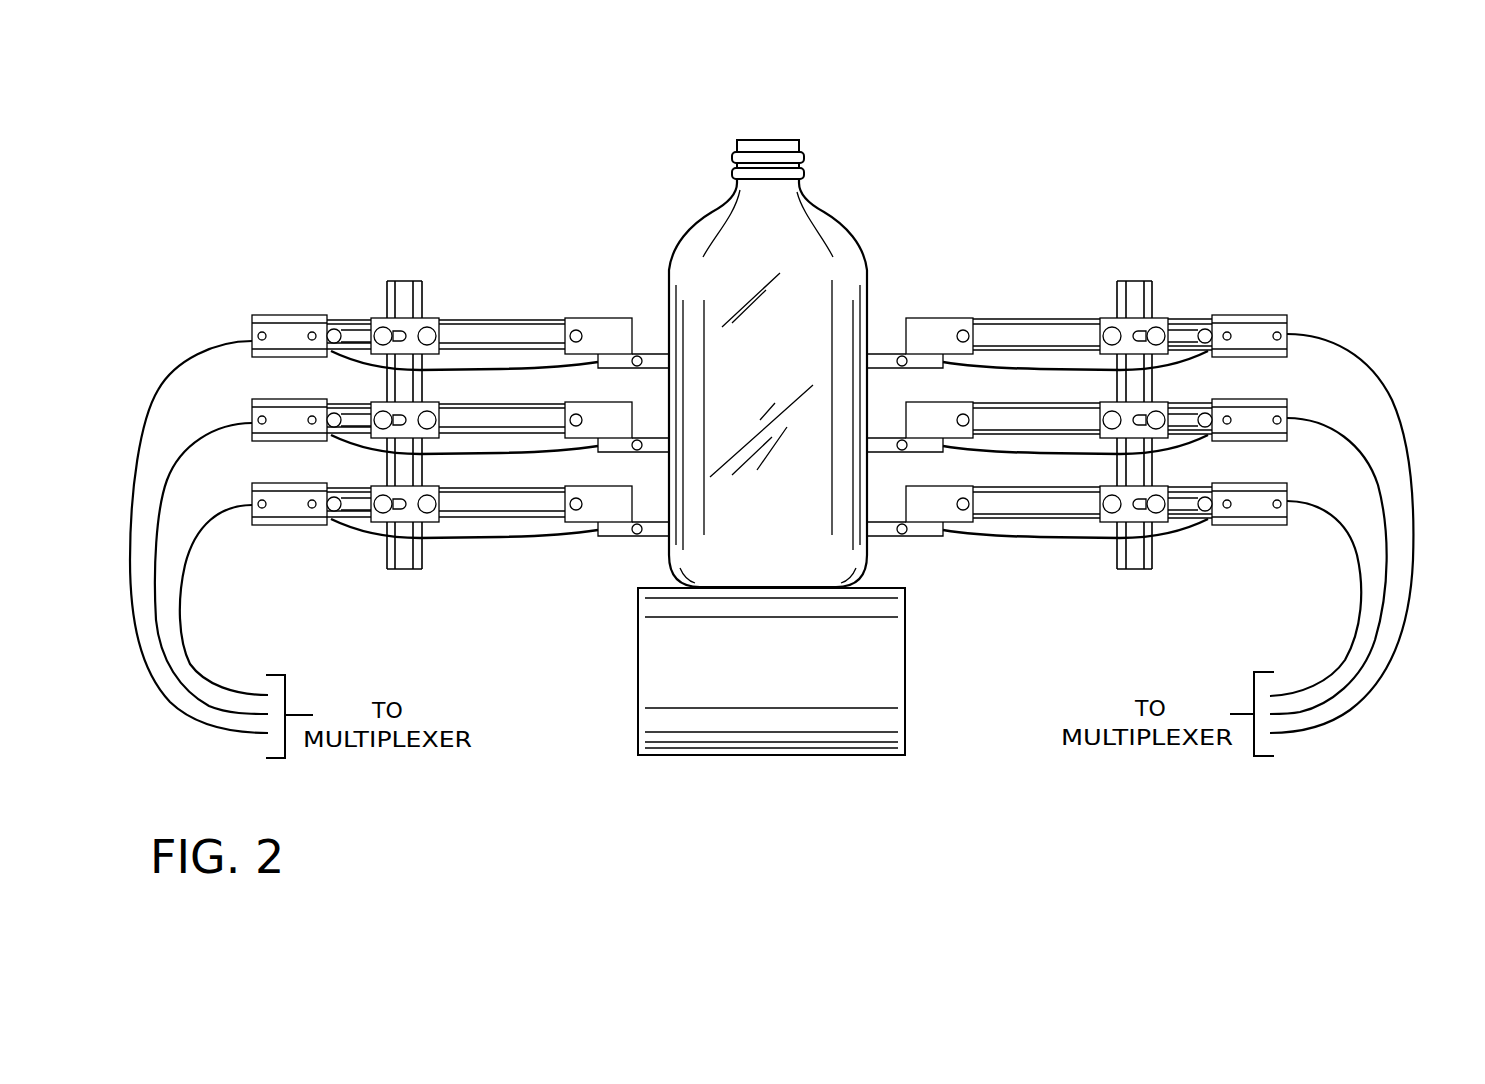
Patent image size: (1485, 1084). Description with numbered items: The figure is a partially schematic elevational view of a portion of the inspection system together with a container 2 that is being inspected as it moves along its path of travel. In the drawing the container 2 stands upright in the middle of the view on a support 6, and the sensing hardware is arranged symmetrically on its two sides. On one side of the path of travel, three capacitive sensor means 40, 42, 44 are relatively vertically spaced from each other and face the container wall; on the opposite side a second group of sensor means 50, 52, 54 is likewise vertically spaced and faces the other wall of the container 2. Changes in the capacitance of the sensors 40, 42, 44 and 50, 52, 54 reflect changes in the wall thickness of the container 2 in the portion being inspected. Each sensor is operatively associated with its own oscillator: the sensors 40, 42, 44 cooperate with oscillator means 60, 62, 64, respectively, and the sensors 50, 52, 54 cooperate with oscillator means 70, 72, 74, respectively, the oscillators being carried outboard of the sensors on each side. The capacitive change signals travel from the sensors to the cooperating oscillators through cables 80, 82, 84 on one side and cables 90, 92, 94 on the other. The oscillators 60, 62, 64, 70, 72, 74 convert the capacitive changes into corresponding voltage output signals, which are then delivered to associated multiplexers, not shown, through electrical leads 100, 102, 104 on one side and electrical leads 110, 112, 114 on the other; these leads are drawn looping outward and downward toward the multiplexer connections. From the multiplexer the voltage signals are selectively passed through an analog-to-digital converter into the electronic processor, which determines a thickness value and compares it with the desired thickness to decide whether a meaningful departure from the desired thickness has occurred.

The container 2 is at (822, 205).
The support platform 6 is at (663, 695).
The sensor means 40 is at (875, 353).
The sensor means 42 is at (875, 438).
The sensor means 44 is at (875, 522).
The sensor means 50 is at (652, 532).
The sensor means 52 is at (648, 446).
The sensor means 54 is at (648, 362).
The oscillator means 60 is at (1252, 312).
The oscillator means 62 is at (1241, 393).
The oscillator means 64 is at (1237, 480).
The oscillator means 70 is at (265, 540).
The oscillator means 72 is at (262, 445).
The oscillator means 74 is at (259, 363).
The cable 80 is at (1003, 370).
The cable 82 is at (993, 452).
The cable 84 is at (1000, 537).
The cable 90 is at (358, 535).
The cable 92 is at (355, 447).
The cable 94 is at (355, 363).
The electrical lead 100 is at (1384, 668).
The electrical lead 102 is at (1384, 613).
The electrical lead 104 is at (1354, 641).
The electrical lead 110 is at (184, 641).
The electrical lead 112 is at (191, 677).
The electrical lead 114 is at (209, 734).